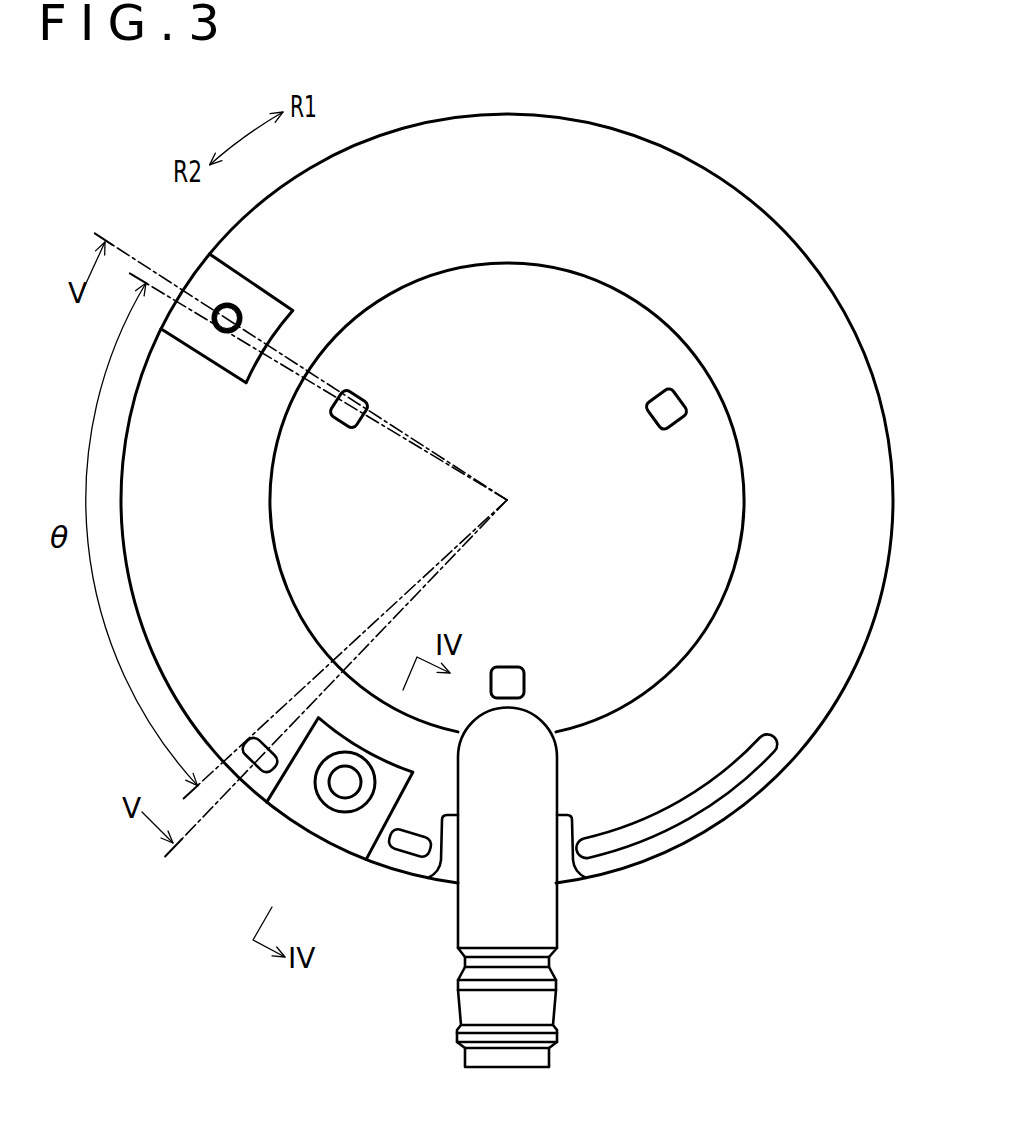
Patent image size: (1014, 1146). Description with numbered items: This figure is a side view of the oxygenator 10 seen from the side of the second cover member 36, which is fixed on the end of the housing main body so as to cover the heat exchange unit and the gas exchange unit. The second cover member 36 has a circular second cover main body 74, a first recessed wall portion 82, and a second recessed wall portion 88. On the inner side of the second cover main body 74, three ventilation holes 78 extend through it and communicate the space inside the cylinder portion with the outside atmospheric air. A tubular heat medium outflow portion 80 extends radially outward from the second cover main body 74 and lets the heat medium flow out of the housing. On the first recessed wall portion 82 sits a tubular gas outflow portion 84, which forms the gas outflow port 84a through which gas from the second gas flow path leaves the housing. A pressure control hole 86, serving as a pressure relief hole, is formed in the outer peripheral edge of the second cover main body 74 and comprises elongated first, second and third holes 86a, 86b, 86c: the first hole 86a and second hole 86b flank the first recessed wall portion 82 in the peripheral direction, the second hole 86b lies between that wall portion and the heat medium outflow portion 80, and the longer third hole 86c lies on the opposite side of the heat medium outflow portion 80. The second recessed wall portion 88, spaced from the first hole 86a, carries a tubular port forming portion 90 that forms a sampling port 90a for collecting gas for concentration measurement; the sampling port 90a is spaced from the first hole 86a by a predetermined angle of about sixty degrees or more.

The hose connection device 10 is at (195, 85).
The second cover member 36 is at (685, 140).
The second cover main body 74 is at (713, 570).
The ventilation holes 78 is at (348, 418).
The heat medium outflow portion 80 is at (543, 933).
The first recessed wall portion 82 is at (350, 820).
The gas outflow portion 84 is at (368, 758).
The gas outflow port 84a is at (342, 782).
The pressure control hole 86 is at (482, 799).
The first hole 86a is at (252, 745).
The second hole 86b is at (407, 850).
The third hole 86c is at (693, 805).
The second recessed wall portion 88 is at (246, 292).
The port forming portion 90 is at (228, 305).
The sampling port 90a is at (222, 331).